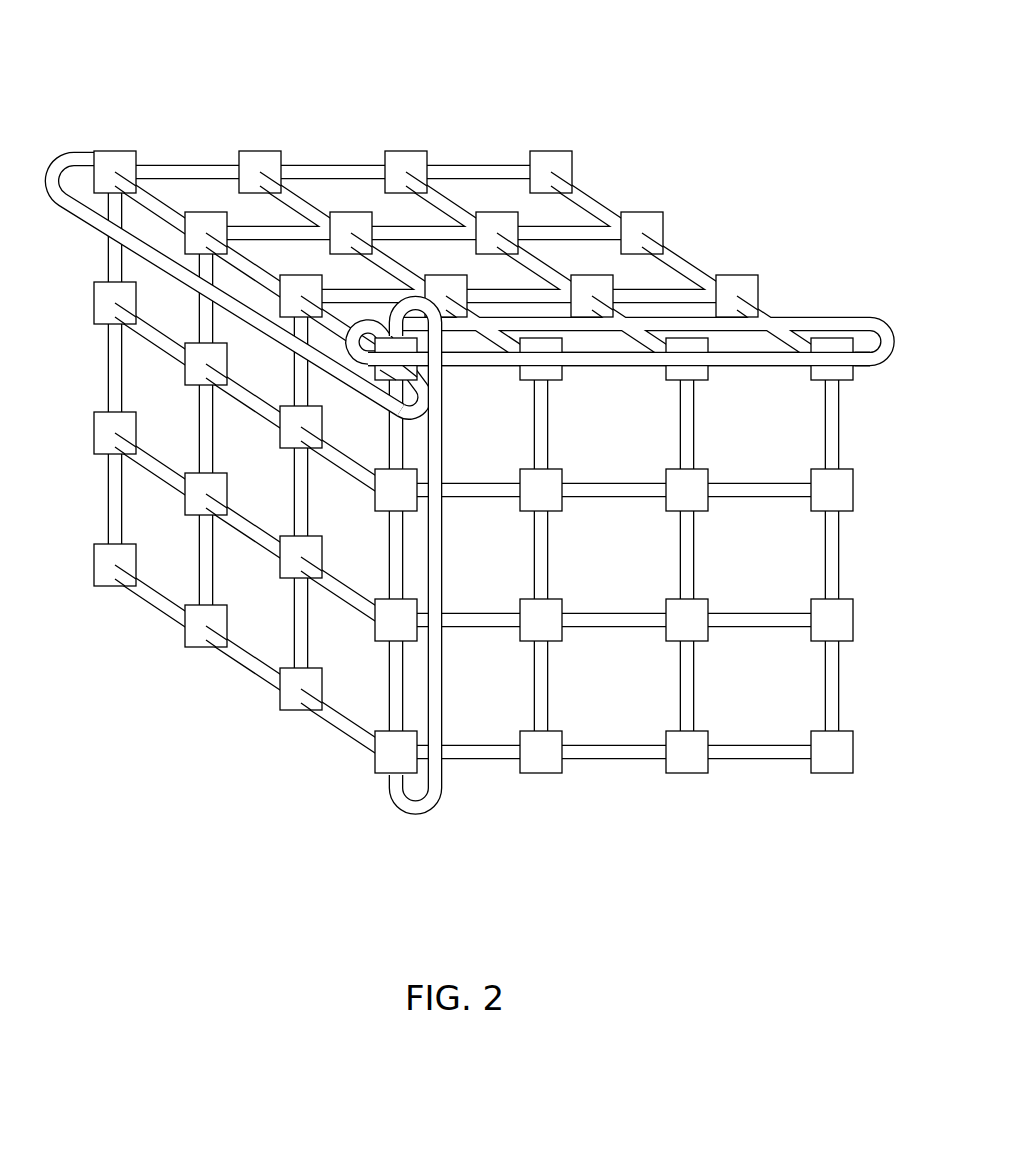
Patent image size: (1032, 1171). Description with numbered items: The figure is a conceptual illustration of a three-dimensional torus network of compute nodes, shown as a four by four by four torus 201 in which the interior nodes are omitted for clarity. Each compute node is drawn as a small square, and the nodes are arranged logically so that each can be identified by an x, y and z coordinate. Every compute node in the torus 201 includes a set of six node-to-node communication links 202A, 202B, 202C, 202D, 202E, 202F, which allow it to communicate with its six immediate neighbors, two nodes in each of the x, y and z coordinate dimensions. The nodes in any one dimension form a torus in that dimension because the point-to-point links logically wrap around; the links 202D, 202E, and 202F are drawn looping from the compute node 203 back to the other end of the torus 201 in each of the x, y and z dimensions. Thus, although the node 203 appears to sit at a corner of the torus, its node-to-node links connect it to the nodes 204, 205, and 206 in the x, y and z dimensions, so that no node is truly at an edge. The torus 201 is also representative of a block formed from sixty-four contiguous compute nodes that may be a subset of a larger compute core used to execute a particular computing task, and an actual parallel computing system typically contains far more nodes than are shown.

The torus 201 is at (460, 391).
The node-to-node communication link 202A is at (464, 366).
The node-to-node communication link 202B is at (404, 447).
The node-to-node communication link 202C is at (363, 332).
The node-to-node communication link 202D is at (853, 317).
The node-to-node communication link 202E is at (413, 813).
The node-to-node communication link 202F is at (50, 148).
The compute node 203 is at (392, 374).
The node 204 is at (118, 160).
The node 205 is at (840, 367).
The node 206 is at (386, 762).